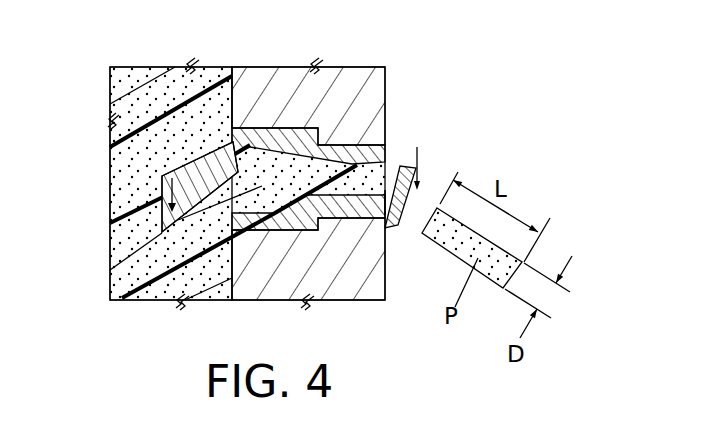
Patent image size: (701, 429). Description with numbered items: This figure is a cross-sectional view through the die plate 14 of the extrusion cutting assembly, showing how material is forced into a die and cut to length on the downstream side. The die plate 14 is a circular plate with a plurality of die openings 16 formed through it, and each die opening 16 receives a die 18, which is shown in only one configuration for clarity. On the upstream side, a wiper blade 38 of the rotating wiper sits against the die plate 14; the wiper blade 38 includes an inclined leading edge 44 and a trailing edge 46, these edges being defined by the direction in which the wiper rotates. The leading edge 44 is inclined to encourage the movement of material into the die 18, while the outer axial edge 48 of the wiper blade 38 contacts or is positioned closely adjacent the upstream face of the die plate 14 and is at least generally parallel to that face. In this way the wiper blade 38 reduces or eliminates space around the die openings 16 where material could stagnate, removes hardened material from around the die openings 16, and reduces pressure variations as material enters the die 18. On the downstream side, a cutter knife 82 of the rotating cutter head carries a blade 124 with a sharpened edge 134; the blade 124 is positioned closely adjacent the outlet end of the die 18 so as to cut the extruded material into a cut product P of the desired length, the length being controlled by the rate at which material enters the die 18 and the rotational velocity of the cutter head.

The die plate 14 is at (388, 97).
The die openings 16 is at (278, 134).
The die 18 is at (283, 208).
The wiper blade 38 is at (188, 164).
The leading edge 44 is at (194, 203).
The trailing edge 46 is at (207, 150).
The outer axial edge 48 is at (242, 158).
The cutter knife 82 is at (403, 163).
The blade 124 is at (389, 207).
The sharpened edge 134 is at (386, 224).